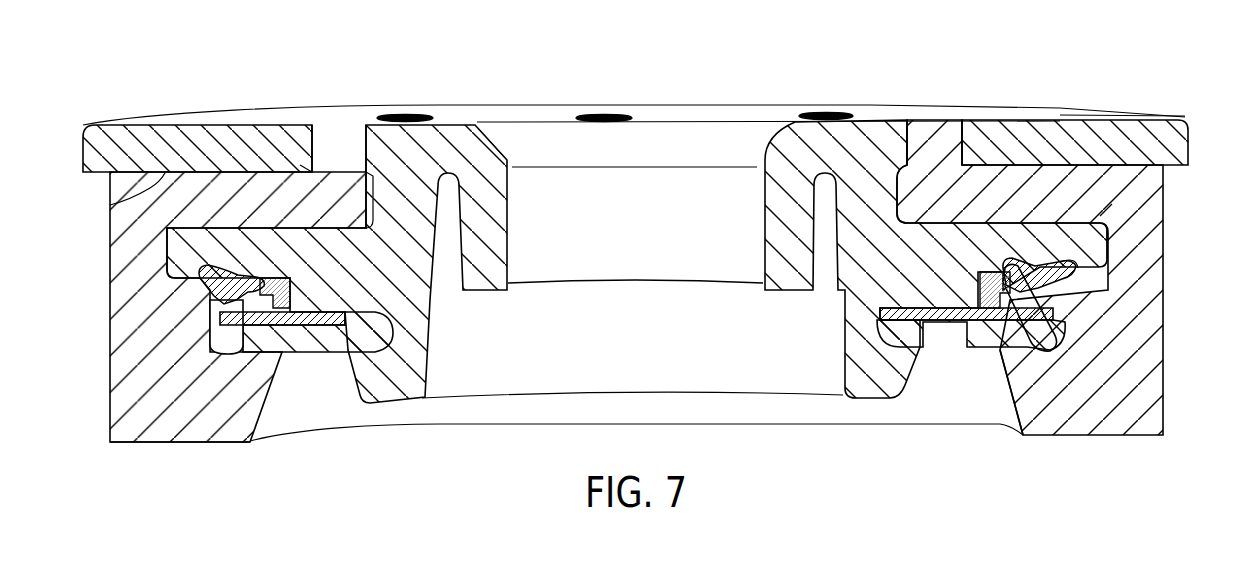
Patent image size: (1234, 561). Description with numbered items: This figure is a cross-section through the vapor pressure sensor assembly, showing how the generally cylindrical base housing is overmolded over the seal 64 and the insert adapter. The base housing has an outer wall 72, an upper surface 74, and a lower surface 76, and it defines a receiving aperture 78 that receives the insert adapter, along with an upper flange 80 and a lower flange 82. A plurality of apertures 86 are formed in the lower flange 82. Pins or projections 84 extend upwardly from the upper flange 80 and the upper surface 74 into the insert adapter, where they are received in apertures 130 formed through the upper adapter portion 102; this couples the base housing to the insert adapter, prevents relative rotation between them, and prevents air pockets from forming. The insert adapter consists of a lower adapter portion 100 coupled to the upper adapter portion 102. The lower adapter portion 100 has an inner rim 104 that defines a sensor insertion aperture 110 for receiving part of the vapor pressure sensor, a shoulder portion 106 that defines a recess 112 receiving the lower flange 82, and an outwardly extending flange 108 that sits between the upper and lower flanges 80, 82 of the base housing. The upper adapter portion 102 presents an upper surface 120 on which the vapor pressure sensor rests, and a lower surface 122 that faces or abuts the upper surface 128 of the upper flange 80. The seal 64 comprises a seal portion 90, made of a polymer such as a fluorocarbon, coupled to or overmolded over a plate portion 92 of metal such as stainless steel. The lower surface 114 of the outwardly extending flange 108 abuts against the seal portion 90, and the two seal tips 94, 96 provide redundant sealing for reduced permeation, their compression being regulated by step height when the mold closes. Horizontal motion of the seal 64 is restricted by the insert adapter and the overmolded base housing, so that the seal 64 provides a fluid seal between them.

The upper adapter portion 102 is at (88, 100).
The upper surface 120 is at (204, 121).
The upper surface 128 is at (273, 163).
The projections 84 is at (337, 148).
The apertures 130 is at (356, 136).
The seal 64 is at (170, 326).
The lower surface 122 is at (118, 208).
The lower surface 76 is at (167, 442).
The inner rim 104 is at (490, 229).
The shoulder portion 106 is at (410, 362).
The apertures 86 is at (330, 338).
The sensor insertion aperture 110 is at (712, 196).
The lower adapter portion 100 is at (428, 434).
The receiving aperture 78 is at (355, 437).
The lower flange 82 is at (903, 350).
The seal portion 90 is at (1062, 300).
The recess 112 is at (872, 304).
The seal tip 94 is at (1042, 300).
The lower surface 114 is at (1062, 282).
The seal tip 96 is at (1076, 263).
The upper flange 80 is at (1008, 190).
The upper surface 74 is at (1125, 160).
The outwardly extending flange 108 is at (1113, 205).
The outer wall 72 is at (1135, 236).
The plate portion 92 is at (1000, 360).